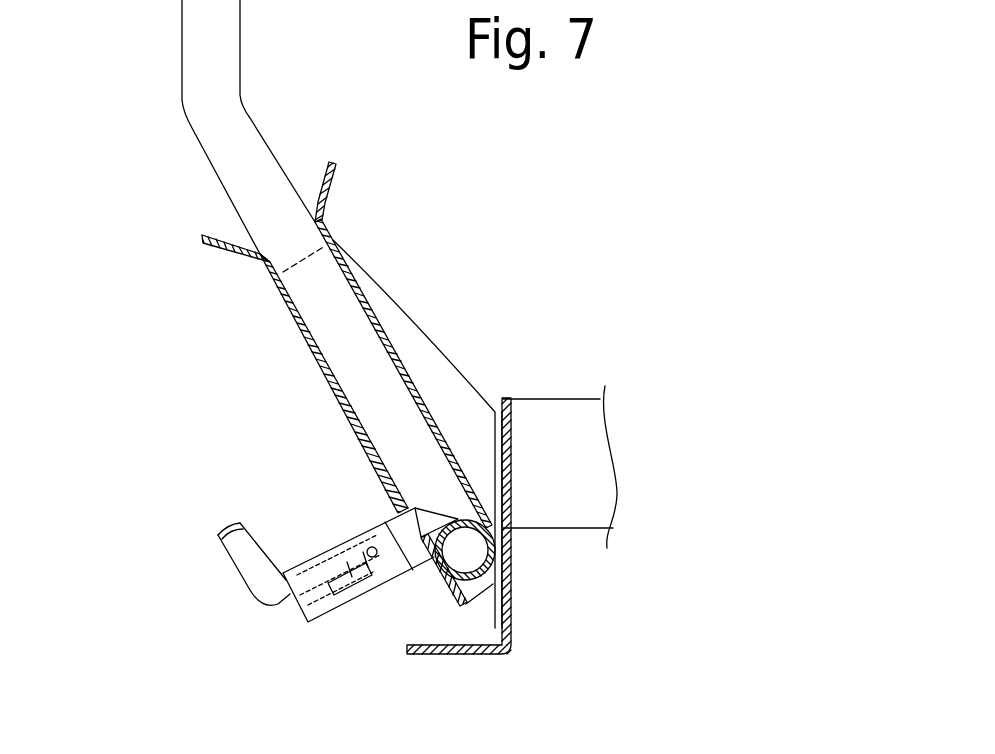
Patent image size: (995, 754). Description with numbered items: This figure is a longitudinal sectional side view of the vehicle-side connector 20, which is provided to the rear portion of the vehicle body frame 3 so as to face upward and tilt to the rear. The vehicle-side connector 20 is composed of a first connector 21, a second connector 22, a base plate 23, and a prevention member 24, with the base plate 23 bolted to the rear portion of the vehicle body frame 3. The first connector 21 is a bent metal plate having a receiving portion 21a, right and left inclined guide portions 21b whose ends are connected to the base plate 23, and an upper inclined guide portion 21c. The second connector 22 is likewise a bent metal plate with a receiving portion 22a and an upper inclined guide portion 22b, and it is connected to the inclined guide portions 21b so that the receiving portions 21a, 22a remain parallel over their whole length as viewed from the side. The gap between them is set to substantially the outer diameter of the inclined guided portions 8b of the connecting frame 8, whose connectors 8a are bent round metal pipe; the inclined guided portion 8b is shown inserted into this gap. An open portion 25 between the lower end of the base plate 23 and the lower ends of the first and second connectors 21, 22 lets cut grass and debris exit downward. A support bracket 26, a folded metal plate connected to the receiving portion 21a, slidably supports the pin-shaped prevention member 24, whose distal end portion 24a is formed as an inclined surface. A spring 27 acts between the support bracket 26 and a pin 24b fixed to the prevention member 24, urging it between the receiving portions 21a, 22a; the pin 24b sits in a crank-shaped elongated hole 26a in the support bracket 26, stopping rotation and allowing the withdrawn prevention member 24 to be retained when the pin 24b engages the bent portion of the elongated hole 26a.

The vehicle body frame 3 is at (565, 513).
The connecting frame 8 is at (215, 226).
The connector 8a is at (196, 33).
The inclined guided portion 8b is at (355, 382).
The vehicle-side connector 20 is at (312, 373).
The first connector 21 is at (323, 414).
The receiving portion 21a is at (312, 357).
The inclined guide portion 21b is at (420, 353).
The upper inclined guide portion 21c is at (226, 241).
The second connector 22 is at (421, 323).
The receiving portion 22a is at (363, 295).
The upper inclined guide portion 22b is at (314, 180).
The base plate 23 is at (495, 440).
The prevention member 24 is at (368, 577).
The distal end portion 24a is at (440, 513).
The pin 24b is at (384, 559).
The open portion 25 is at (479, 618).
The support bracket 26 is at (290, 596).
The elongated hole 26a is at (343, 598).
The spring 27 is at (297, 566).